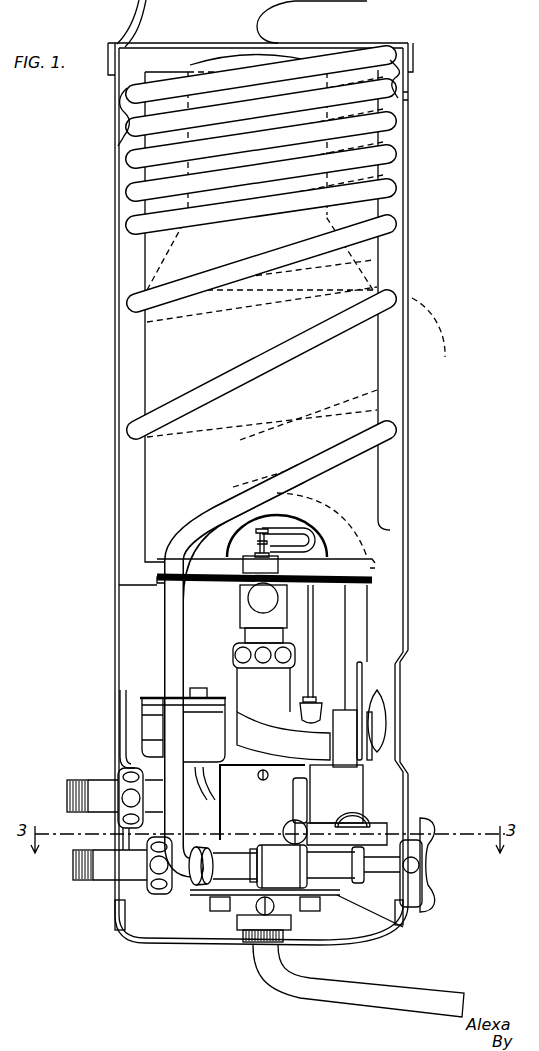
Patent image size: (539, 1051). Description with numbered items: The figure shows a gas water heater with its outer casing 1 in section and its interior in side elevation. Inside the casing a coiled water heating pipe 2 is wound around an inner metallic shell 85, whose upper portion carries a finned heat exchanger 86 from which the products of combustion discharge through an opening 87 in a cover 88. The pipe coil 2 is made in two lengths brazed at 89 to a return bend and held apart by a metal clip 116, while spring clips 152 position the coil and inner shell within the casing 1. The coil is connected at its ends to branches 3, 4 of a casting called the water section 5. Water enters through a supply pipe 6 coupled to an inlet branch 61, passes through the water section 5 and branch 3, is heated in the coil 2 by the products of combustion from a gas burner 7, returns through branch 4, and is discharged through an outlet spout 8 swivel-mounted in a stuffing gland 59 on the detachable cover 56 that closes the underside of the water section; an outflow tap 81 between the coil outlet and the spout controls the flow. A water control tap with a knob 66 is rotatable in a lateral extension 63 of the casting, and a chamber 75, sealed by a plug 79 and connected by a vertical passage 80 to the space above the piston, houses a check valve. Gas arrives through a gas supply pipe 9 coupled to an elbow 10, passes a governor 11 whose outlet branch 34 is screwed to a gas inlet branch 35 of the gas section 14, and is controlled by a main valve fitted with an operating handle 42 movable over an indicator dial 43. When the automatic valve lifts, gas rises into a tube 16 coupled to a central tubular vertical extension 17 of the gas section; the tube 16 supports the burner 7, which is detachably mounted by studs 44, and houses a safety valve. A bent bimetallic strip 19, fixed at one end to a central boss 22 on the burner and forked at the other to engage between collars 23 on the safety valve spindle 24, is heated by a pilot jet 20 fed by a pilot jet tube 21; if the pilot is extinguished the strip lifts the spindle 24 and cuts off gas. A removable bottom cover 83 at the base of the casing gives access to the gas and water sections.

The outer casing 1 is at (118, 450).
The coiled water heating pipe 2 is at (323, 338).
The branch 3 is at (368, 805).
The branch 4 is at (212, 872).
The water section 5 is at (230, 873).
The supply pipe 6 is at (73, 853).
The gas burner 7 is at (157, 583).
The outlet spout 8 is at (360, 993).
The gas supply pipe 9 is at (72, 800).
The elbow 10 is at (192, 790).
The governor 11 is at (165, 727).
The gas section 14 is at (263, 717).
The tube 16 is at (255, 635).
The central tubular vertical extension 17 is at (248, 683).
The bent bimetallic strip 19 is at (300, 530).
The pilot jet 20 is at (333, 577).
The pilot jet tube 21 is at (317, 622).
The central boss 22 is at (183, 565).
The collars 23 is at (257, 533).
The spindle 24 is at (283, 545).
The outlet branch 34 is at (223, 737).
The gas inlet branch 35 is at (223, 712).
The operating handle 42 is at (378, 707).
The indicator dial 43 is at (362, 673).
The studs 44 is at (260, 780).
The detachable cover 56 is at (390, 920).
The stuffing gland 59 is at (250, 930).
The inlet branch 61 is at (183, 878).
The lateral extension 63 is at (395, 840).
The knob 66 is at (422, 820).
The chamber 75 is at (312, 830).
The plug 79 is at (290, 822).
The vertical passage 80 is at (305, 795).
The outflow tap 81 is at (335, 870).
The removable bottom cover 83 is at (330, 943).
The inner metallic shell 85 is at (352, 393).
The finned heat exchanger 86 is at (428, 340).
The opening 87 is at (312, 22).
The cover 88 is at (133, 13).
The brazed joint 89 is at (407, 72).
The metal clip 116 is at (407, 97).
The spring clips 152 is at (118, 117).